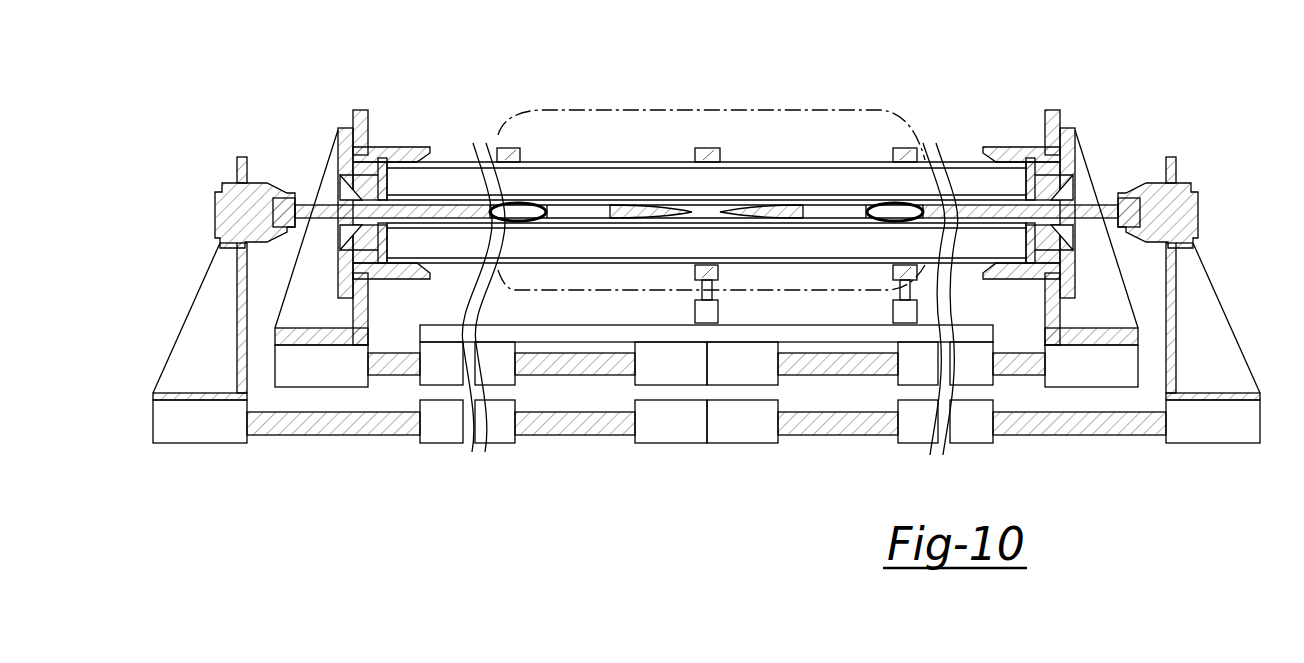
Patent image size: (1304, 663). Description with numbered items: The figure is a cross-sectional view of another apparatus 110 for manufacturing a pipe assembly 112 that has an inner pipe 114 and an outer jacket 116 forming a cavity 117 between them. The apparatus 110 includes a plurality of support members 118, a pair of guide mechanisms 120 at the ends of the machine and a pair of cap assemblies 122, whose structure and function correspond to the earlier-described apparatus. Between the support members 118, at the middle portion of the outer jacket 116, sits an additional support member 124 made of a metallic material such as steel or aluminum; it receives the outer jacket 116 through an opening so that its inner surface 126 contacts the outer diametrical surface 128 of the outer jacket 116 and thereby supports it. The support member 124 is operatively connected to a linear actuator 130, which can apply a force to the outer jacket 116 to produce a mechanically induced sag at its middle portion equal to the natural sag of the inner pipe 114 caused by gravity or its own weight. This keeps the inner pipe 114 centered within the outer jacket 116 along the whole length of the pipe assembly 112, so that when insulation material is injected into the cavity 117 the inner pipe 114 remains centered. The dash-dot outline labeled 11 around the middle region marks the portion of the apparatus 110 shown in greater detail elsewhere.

The apparatus 110 is at (700, 272).
The pipe assembly 112 is at (447, 133).
The inner pipe 114 is at (451, 238).
The outer jacket 116 is at (707, 152).
The cavity 117 is at (1007, 182).
The support members 118 is at (508, 147).
The guide mechanisms 120 is at (203, 463).
The cap assemblies 122 is at (1083, 390).
The support member 124 is at (710, 147).
The inner surface 126 is at (720, 162).
The outer diametrical surface 128 is at (598, 162).
The linear actuator 130 is at (707, 313).
The phantom outline 11 is at (820, 110).